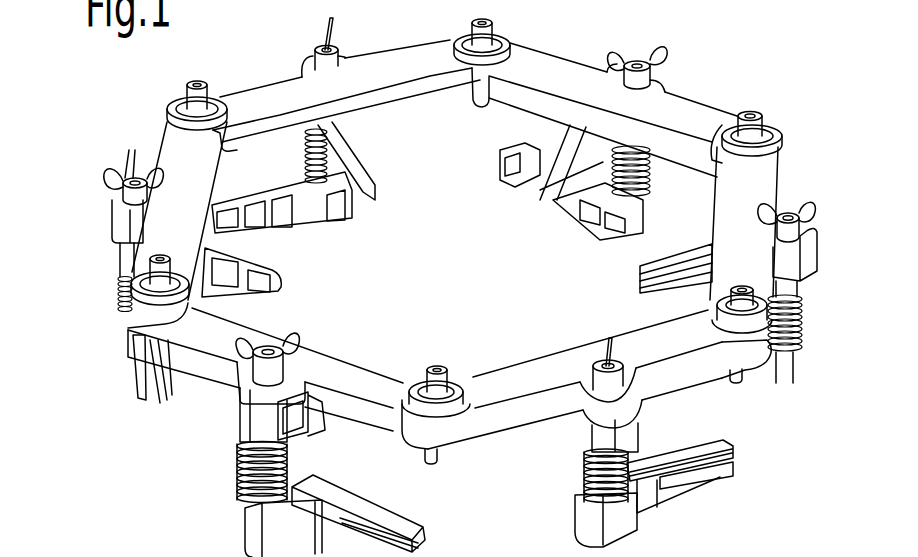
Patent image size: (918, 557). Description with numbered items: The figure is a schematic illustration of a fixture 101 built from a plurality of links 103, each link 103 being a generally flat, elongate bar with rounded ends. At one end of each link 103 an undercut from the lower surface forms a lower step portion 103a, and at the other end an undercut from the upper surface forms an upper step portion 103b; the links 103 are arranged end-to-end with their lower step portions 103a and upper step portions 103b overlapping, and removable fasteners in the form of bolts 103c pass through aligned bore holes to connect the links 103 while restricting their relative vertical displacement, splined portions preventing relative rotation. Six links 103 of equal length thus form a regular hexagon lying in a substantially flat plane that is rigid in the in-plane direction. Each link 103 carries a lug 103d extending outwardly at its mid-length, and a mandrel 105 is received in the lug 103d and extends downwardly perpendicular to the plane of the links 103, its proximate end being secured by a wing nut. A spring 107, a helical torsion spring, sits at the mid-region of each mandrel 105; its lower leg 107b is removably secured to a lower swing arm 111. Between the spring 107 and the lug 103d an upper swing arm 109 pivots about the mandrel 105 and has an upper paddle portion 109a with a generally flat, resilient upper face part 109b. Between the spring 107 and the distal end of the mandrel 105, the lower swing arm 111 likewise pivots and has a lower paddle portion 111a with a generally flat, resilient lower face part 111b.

The fixture 101 is at (128, 95).
The link 103 is at (278, 90).
The lower step portion 103a is at (399, 447).
The upper step portion 103b is at (435, 35).
The removable fastener (bolt) 103c is at (740, 125).
The lug 103d is at (788, 263).
The mandrel 105 is at (135, 173).
The spring 107 is at (238, 481).
The lower leg 107b is at (296, 482).
The upper swing arm 109 is at (262, 423).
The upper paddle portion 109a is at (683, 268).
The upper face part 109b is at (548, 137).
The lower swing arm 111 is at (603, 530).
The lower paddle portion 111a is at (672, 489).
The lower face part 111b is at (673, 432).